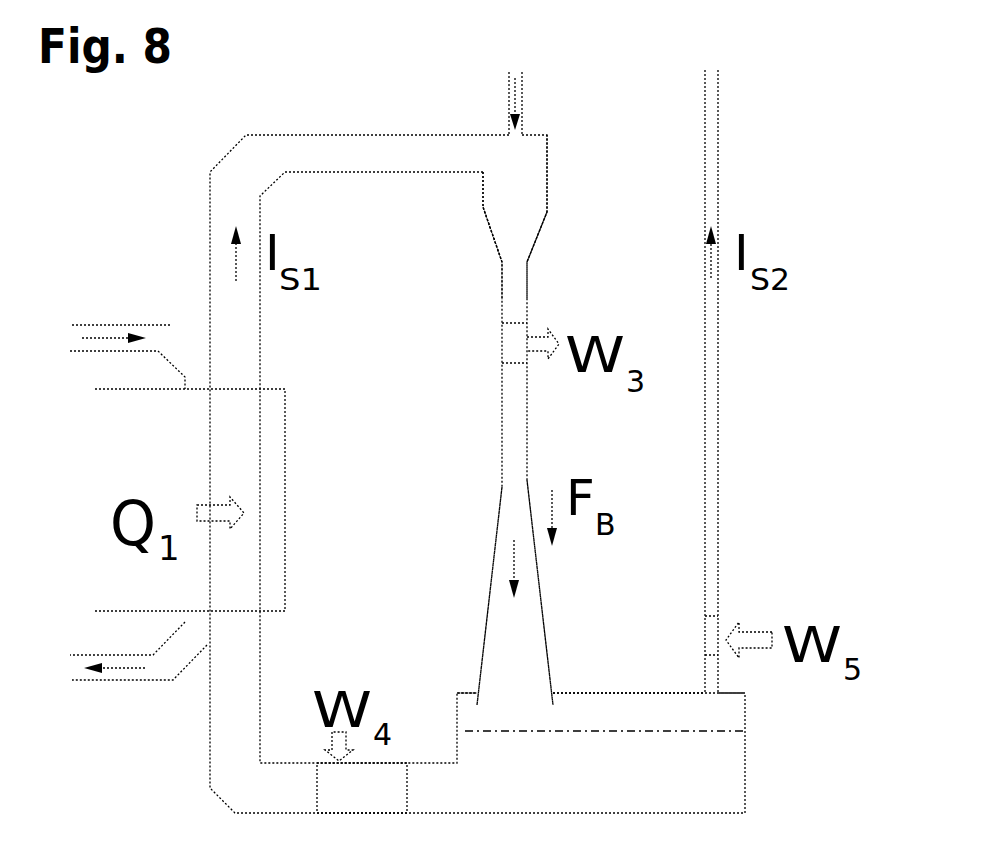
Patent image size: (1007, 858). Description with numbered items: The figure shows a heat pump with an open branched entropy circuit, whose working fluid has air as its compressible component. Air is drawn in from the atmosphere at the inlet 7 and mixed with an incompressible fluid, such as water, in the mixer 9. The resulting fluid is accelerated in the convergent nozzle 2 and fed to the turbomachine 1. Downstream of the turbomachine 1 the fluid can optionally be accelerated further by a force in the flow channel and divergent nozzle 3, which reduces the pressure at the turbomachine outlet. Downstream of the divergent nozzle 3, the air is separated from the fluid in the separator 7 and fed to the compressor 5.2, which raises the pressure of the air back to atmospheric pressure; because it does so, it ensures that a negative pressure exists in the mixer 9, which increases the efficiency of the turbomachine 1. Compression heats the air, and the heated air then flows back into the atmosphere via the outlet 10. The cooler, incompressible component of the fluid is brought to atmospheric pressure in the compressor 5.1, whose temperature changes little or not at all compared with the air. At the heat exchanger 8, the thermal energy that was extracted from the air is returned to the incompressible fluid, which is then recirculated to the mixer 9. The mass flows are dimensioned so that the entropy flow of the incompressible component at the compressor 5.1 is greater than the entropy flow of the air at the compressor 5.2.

The turbomachine 1 is at (495, 351).
The convergent nozzle 2 is at (505, 253).
The divergent nozzle 3 is at (495, 592).
The compressor 5.1 is at (362, 791).
The compressor 5.2 is at (670, 643).
The inlet / separator 7 is at (601, 428).
The heat exchanger 8 is at (190, 500).
The mixer 9 is at (515, 198).
The outlet 10 is at (718, 355).